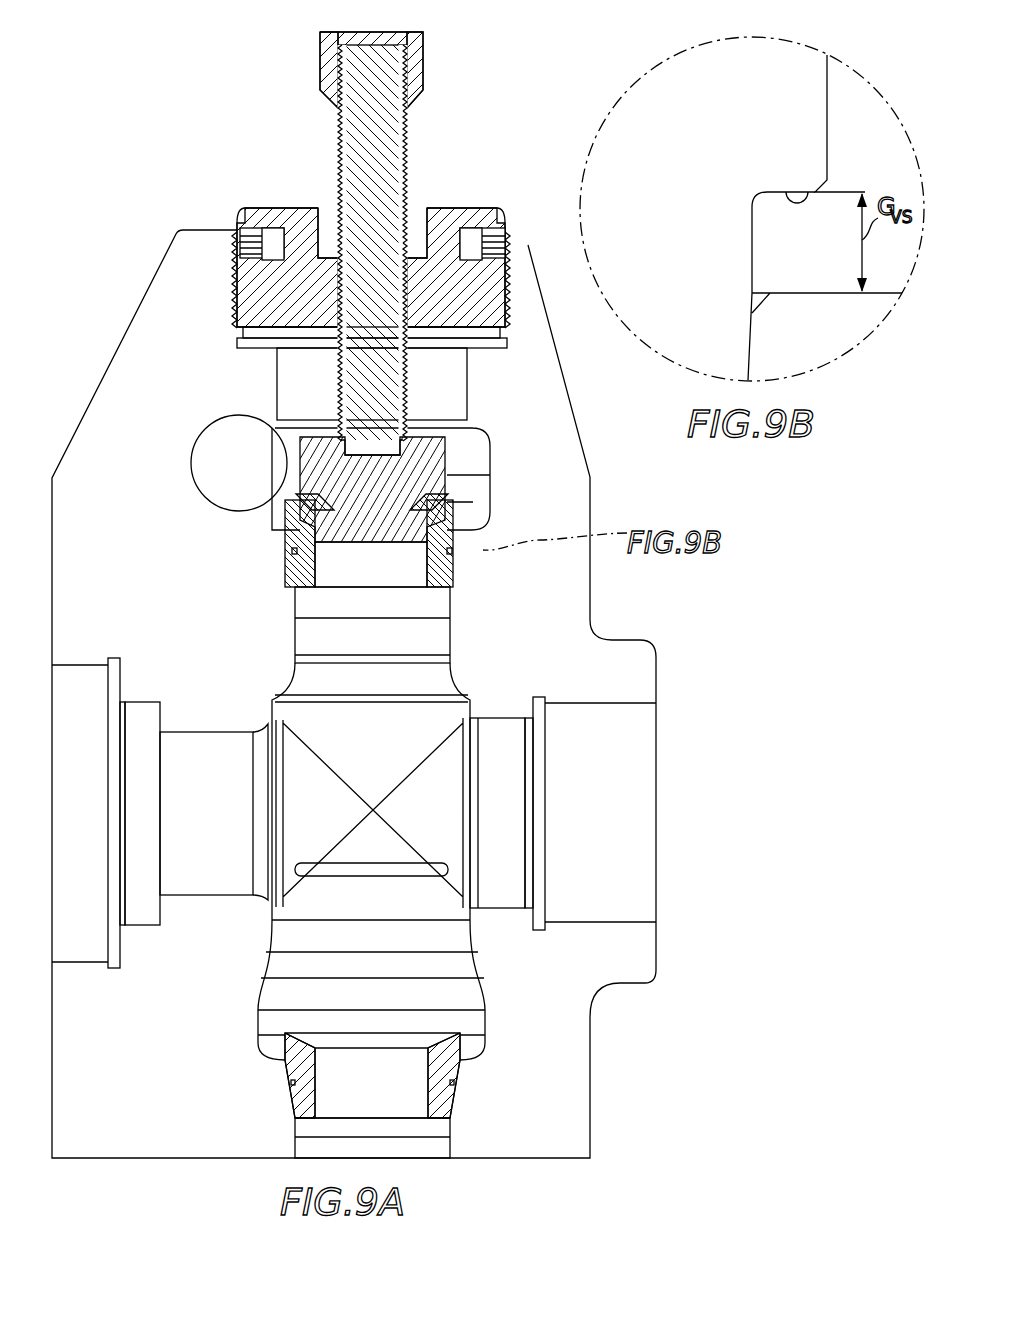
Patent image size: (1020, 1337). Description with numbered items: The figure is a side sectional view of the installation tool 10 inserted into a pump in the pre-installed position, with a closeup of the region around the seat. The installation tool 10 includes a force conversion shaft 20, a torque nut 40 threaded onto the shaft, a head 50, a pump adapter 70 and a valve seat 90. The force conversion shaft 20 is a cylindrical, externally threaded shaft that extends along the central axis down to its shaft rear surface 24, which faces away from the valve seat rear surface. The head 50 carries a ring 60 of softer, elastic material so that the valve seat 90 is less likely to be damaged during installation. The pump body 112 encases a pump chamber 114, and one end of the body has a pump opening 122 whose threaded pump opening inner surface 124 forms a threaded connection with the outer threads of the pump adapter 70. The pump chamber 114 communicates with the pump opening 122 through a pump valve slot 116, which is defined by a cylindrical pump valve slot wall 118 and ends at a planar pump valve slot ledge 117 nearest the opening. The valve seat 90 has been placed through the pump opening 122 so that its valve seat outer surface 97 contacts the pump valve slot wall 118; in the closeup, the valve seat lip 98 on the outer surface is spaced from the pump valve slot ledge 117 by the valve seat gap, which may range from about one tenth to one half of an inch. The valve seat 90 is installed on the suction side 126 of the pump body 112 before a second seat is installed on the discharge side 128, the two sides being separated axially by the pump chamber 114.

In FIG. 9A, the installation tool 10 is at (369, 236).
In FIG. 9A, the force conversion shaft 20 is at (360, 128).
In FIG. 9A, the shaft rear surface 24 is at (382, 458).
In FIG. 9A, the torque nut 40 is at (330, 57).
In FIG. 9A, the head 50 is at (409, 477).
In FIG. 9A, the ring 60 is at (314, 511).
In FIG. 9A, the pump adapter 70 is at (366, 247).
In FIG. 9A, the valve seat 90 is at (348, 560).
In FIG. 9B, the valve seat 90 is at (680, 88).
In FIG. 9A, the valve seat outer surface 97 is at (288, 565).
In FIG. 9B, the valve seat lip 98 is at (790, 194).
In FIG. 9A, the pump body 112 is at (281, 872).
In FIG. 9A, the pump chamber 114 is at (428, 792).
In FIG. 9A, the pump valve slot 116 is at (390, 565).
In FIG. 9A, the pump valve slot ledge 117 is at (305, 508).
In FIG. 9B, the pump valve slot ledge 117 is at (813, 292).
In FIG. 9A, the pump valve slot wall 118 is at (296, 590).
In FIG. 9A, the pump opening 122 is at (260, 294).
In FIG. 9A, the pump opening inner surface 124 is at (506, 272).
In FIG. 9A, the suction side 126 is at (553, 1062).
In FIG. 9A, the discharge side 128 is at (97, 468).